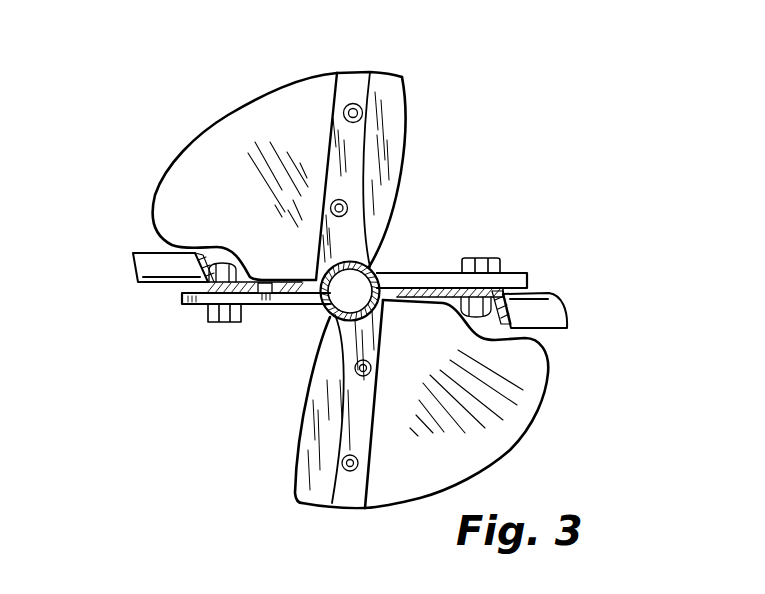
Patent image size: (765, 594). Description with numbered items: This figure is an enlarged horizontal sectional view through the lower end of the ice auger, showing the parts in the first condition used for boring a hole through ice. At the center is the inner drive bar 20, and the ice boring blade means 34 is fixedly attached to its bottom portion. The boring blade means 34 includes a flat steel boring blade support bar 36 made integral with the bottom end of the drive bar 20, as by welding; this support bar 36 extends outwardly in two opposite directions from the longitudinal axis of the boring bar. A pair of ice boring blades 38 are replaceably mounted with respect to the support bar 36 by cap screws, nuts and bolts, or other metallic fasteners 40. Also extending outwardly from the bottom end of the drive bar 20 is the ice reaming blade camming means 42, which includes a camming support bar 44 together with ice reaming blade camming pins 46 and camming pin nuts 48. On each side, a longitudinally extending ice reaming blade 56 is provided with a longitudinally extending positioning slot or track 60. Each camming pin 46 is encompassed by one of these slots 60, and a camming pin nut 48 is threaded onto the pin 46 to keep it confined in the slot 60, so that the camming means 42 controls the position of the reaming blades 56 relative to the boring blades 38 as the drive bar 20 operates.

The drive bar 20 is at (372, 270).
The ice boring blade means 34 is at (519, 436).
The boring blade support bar 36 is at (350, 83).
The ice boring blade 38 is at (252, 112).
The metallic fasteners 40 is at (362, 113).
The ice reaming blade camming means 42 is at (403, 272).
The camming support bar 44 is at (182, 298).
The ice reaming blade camming pin 46 is at (207, 313).
The camming pin nut 48 is at (221, 260).
The ice reaming blade 56 is at (147, 260).
The positioning slot 60 is at (262, 278).